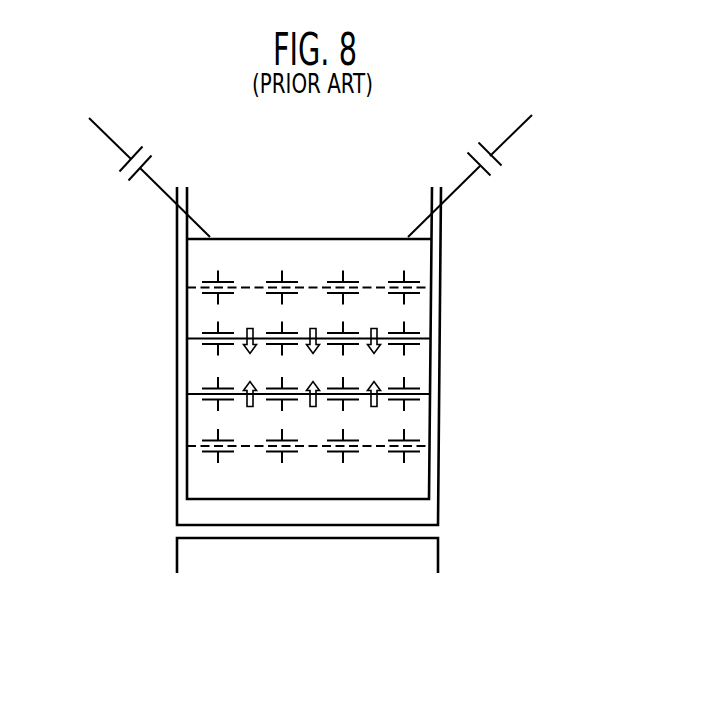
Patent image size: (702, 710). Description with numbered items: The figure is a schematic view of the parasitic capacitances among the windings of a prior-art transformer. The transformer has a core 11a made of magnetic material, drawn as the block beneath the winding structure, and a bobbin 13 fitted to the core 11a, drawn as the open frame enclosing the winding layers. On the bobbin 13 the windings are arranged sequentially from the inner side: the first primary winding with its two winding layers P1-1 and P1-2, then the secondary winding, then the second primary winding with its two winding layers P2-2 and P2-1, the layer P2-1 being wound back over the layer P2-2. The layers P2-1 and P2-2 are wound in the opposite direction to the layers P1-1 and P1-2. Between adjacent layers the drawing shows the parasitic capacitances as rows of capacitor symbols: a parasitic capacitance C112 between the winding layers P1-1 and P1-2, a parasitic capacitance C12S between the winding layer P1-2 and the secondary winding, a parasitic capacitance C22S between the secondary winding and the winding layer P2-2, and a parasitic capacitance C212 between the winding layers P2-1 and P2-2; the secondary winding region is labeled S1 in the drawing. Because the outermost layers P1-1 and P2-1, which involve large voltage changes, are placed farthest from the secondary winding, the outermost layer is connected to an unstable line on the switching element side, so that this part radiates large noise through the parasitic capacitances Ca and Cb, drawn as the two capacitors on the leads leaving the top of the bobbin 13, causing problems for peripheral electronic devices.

The bobbin 13 is at (441, 240).
The core 11a is at (438, 552).
The parasitic capacitance Ca is at (142, 177).
The parasitic capacitance Cb is at (477, 176).
The winding layer P2-1 is at (342, 274).
The winding layer P2-2 is at (342, 326).
The winding layer P1-2 is at (342, 415).
The winding layer P1-1 is at (342, 467).
The spacing between electrode planes S1 is at (367, 368).
The parasitic capacitance C212 is at (264, 288).
The parasitic capacitance C22S is at (264, 337).
The parasitic capacitance C12S is at (264, 394).
The parasitic capacitance C112 is at (264, 446).